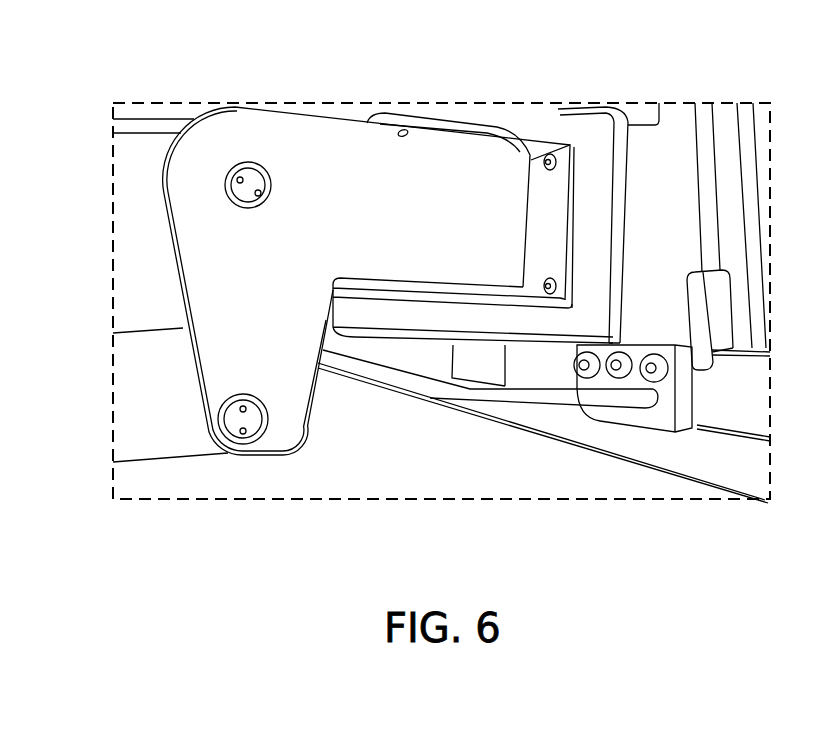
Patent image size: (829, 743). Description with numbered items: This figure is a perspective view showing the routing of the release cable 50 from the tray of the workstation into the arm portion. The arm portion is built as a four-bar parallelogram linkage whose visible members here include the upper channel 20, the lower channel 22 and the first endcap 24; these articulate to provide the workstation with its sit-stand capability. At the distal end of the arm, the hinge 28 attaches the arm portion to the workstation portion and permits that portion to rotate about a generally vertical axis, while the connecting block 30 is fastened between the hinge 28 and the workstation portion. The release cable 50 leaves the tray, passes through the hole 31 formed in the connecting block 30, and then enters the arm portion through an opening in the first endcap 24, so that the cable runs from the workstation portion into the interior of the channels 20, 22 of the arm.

The upper channel 20 is at (132, 283).
The lower channel 22 is at (123, 413).
The first endcap 24 is at (258, 127).
The hinge 28 is at (557, 122).
The connecting block 30 is at (681, 130).
The hole 31 is at (652, 406).
The release cable 50 is at (428, 385).